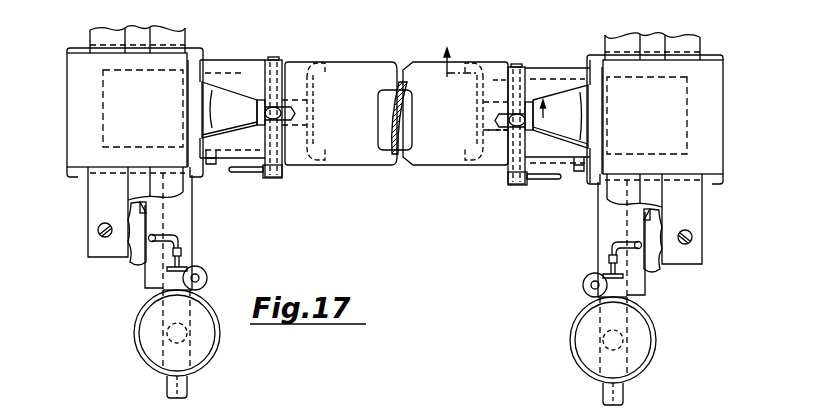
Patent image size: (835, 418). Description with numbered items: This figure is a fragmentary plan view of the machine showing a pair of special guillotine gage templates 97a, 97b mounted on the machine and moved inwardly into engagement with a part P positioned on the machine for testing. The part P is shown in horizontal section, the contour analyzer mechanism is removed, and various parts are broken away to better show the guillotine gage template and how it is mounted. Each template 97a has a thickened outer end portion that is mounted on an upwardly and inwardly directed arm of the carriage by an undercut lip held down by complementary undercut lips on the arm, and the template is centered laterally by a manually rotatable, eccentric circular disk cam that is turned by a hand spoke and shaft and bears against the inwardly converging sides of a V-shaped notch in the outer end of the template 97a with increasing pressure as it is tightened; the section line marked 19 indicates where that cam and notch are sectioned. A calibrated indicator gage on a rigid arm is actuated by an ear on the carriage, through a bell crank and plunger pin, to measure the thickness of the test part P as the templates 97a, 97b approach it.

The guillotine gage template 97a is at (443, 157).
The guillotine gage template 97b is at (346, 158).
The part P is at (400, 84).
The section line 19- 19 is at (503, 89).